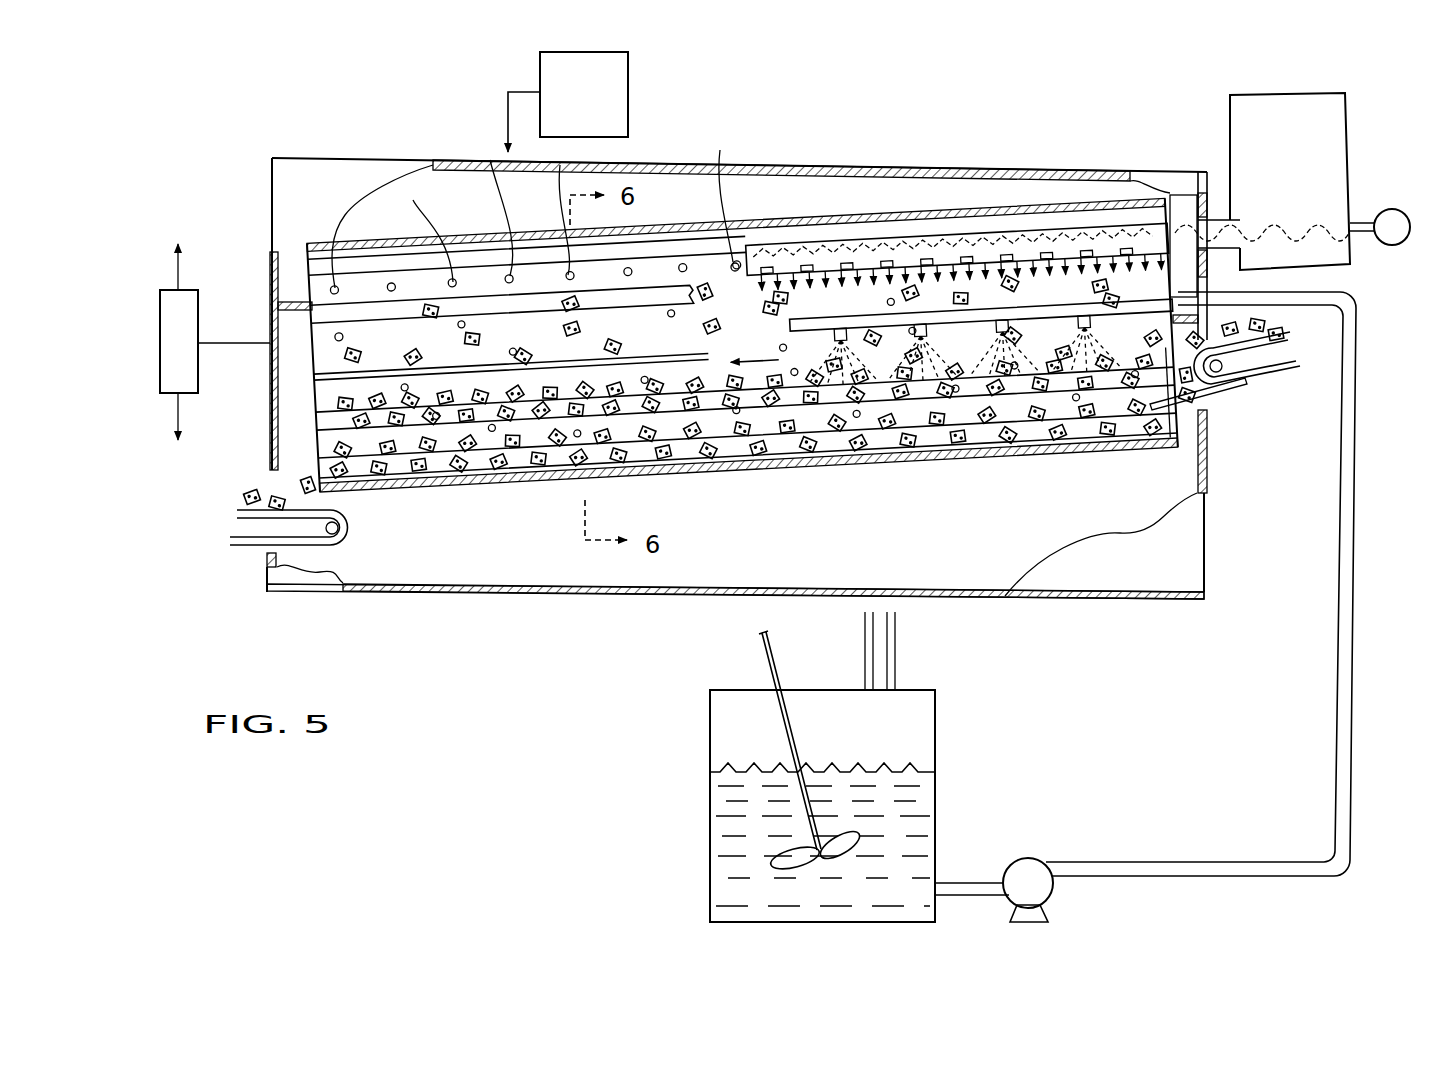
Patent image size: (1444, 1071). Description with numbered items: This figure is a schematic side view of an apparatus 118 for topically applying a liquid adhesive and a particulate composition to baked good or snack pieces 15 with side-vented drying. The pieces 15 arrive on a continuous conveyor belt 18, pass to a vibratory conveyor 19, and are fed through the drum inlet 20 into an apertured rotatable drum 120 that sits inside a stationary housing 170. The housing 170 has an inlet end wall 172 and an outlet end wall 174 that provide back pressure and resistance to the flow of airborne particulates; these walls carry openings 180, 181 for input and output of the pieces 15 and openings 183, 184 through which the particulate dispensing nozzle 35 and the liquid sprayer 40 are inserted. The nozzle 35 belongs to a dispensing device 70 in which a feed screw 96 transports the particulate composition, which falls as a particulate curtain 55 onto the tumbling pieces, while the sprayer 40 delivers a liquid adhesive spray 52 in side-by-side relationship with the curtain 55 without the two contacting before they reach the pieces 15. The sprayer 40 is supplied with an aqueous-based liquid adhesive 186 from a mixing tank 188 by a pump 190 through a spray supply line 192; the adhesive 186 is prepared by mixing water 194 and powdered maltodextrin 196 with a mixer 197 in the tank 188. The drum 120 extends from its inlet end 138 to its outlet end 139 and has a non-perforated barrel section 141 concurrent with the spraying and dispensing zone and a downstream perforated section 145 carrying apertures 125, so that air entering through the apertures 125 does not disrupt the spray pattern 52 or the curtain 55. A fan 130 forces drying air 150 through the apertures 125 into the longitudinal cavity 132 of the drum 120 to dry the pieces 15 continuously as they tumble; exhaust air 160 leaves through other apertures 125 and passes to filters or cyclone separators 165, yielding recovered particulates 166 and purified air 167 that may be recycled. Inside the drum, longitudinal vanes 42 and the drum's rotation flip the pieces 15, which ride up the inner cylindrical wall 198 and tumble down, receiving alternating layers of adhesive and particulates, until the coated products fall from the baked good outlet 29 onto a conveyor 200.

The apparatus 118 is at (345, 72).
The stationary housing 170 is at (290, 160).
The inlet end wall 172 is at (1207, 475).
The apertured rotatable drum 120 is at (445, 492).
The apertures 125 is at (337, 336).
The drying air 150 is at (507, 100).
The fan 130 is at (628, 70).
The longitudinal cavity 132 is at (705, 280).
The non-perforated barrel section 141 is at (850, 240).
The particulate curtain 55 is at (878, 268).
The particulate dispensing nozzle 35 is at (940, 246).
The feed screw 96 is at (968, 235).
The liquid sprayer 40 is at (1035, 300).
The longitudinal vanes 42 is at (310, 265).
The inlet end 138 is at (1173, 290).
The opening 183 is at (1212, 215).
The dispensing device 70 is at (1265, 95).
The opening 184 is at (1348, 292).
The baked good or snack pieces 15 is at (1265, 328).
The continuous conveyor belt 18 is at (1288, 366).
The vibratory conveyor 19 is at (1250, 392).
The opening 180 is at (1217, 410).
The drum inlet 20 is at (1170, 430).
The liquid adhesive spray 52 is at (839, 384).
The conveyor 200 is at (250, 546).
The opening 181 is at (266, 482).
The outlet end wall 174 is at (266, 447).
The baked good outlet 29 is at (270, 431).
The outlet end 139 is at (272, 305).
The exhaust air 160 is at (228, 343).
The cyclone separators 165 is at (160, 315).
The recovered particulates 166 is at (177, 432).
The purified air 167 is at (176, 245).
The inner cylindrical wall 198 is at (487, 254).
The perforated barrel section 145 is at (556, 295).
The aqueous-based liquid adhesive 186 is at (935, 770).
The mixing tank 188 is at (937, 700).
The pump 190 is at (1026, 858).
The spray supply line 192 is at (1338, 668).
The water 194 is at (896, 668).
The maltodextrin 196 is at (863, 668).
The mixer 197 is at (805, 822).